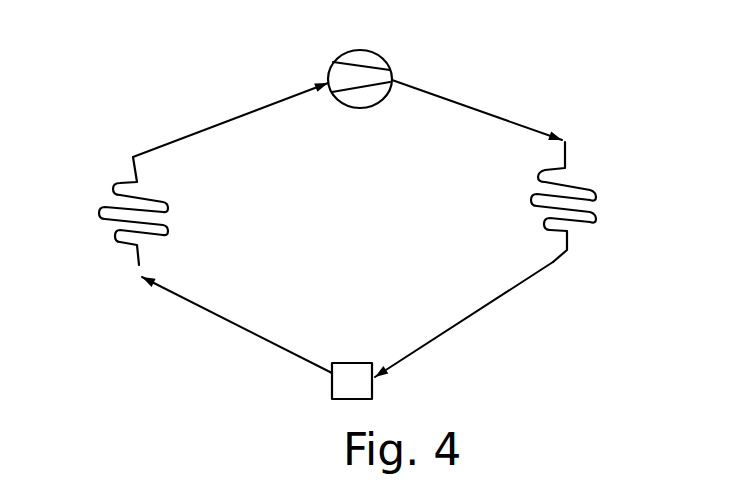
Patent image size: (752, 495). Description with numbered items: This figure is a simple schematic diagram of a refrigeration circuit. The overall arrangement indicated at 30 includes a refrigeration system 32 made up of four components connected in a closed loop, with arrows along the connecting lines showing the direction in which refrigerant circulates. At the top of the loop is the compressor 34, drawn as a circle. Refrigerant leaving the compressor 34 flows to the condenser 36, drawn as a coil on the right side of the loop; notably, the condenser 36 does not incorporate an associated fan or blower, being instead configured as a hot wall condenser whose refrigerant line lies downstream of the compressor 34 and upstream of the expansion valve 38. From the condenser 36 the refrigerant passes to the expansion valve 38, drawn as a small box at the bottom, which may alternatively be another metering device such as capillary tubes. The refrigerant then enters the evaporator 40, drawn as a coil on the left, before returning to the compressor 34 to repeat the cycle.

The cooling system 30 is at (636, 94).
The refrigeration system 32 is at (538, 92).
The compressor 34 is at (372, 53).
The condenser 36 is at (585, 180).
The expansion valve 38 is at (372, 392).
The evaporator 40 is at (113, 223).